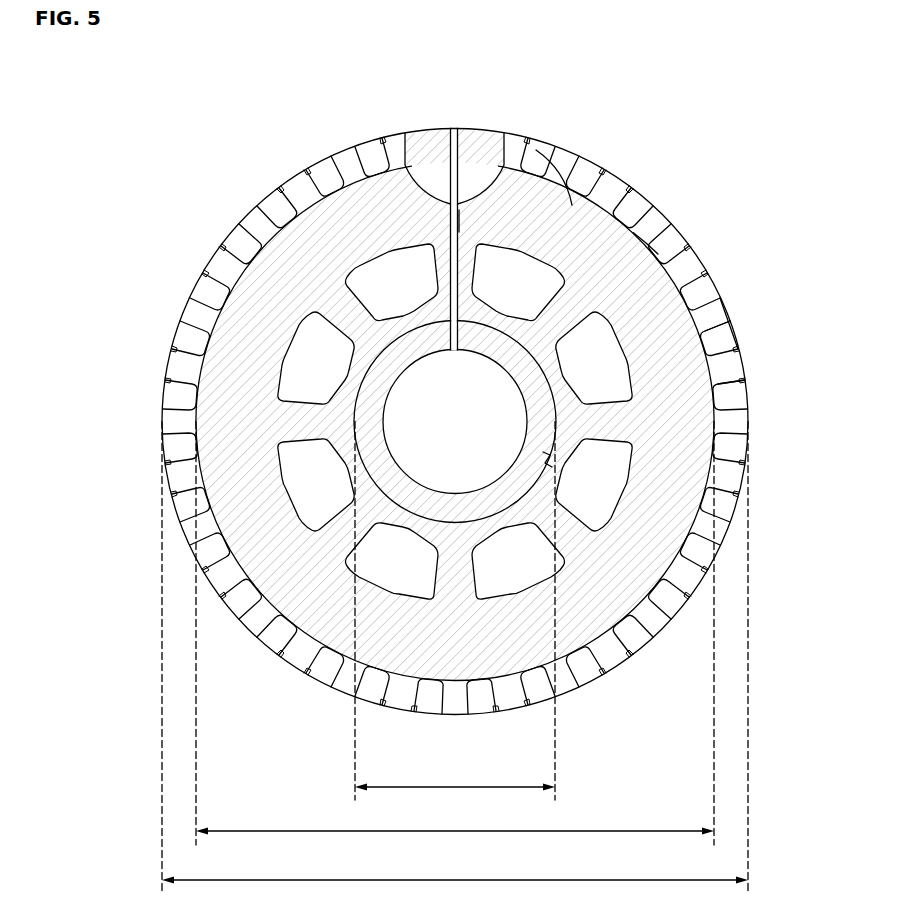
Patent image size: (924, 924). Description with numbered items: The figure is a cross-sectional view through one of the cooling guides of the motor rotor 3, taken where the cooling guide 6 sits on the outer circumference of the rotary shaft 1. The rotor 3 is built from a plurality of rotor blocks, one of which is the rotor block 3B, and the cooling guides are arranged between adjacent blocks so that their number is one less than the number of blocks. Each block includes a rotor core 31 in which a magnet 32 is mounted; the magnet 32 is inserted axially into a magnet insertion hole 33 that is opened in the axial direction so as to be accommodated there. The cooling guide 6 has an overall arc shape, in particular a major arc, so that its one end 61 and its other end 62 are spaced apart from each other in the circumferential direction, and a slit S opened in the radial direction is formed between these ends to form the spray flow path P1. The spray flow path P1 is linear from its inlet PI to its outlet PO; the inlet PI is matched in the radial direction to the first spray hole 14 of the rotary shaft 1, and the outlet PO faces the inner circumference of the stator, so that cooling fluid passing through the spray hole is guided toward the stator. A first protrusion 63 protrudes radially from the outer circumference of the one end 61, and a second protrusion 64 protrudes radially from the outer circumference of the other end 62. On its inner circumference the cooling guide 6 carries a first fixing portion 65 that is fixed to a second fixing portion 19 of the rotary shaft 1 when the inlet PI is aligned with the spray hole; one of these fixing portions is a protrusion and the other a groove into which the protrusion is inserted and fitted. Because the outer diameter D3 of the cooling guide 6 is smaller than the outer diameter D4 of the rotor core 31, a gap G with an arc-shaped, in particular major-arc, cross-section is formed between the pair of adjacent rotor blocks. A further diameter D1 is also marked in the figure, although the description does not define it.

The rotary shaft 1 is at (374, 383).
The rotor 3 is at (114, 483).
The rotor block 3B is at (772, 426).
The cooling guide 6 is at (280, 262).
The first spray hole 14 is at (449, 333).
The second fixing portion 19 is at (618, 348).
The rotor core 31 is at (728, 349).
The magnet 32 is at (722, 330).
The magnet insertion hole 33 is at (734, 369).
The one end 61 is at (405, 160).
The other end 62 is at (504, 160).
The first protrusion 63 is at (447, 128).
The second protrusion 64 is at (460, 128).
The first fixing portion 65 is at (551, 462).
The outlet PO is at (455, 127).
The slit S is at (462, 200).
The spray flow path P1 is at (684, 152).
The inlet PI is at (460, 231).
The gap G is at (648, 238).
The shaft diameter D1 is at (455, 611).
The outer diameter of the cooling guides D3 is at (455, 634).
The outer diameter of the rotor core D4 is at (455, 658).